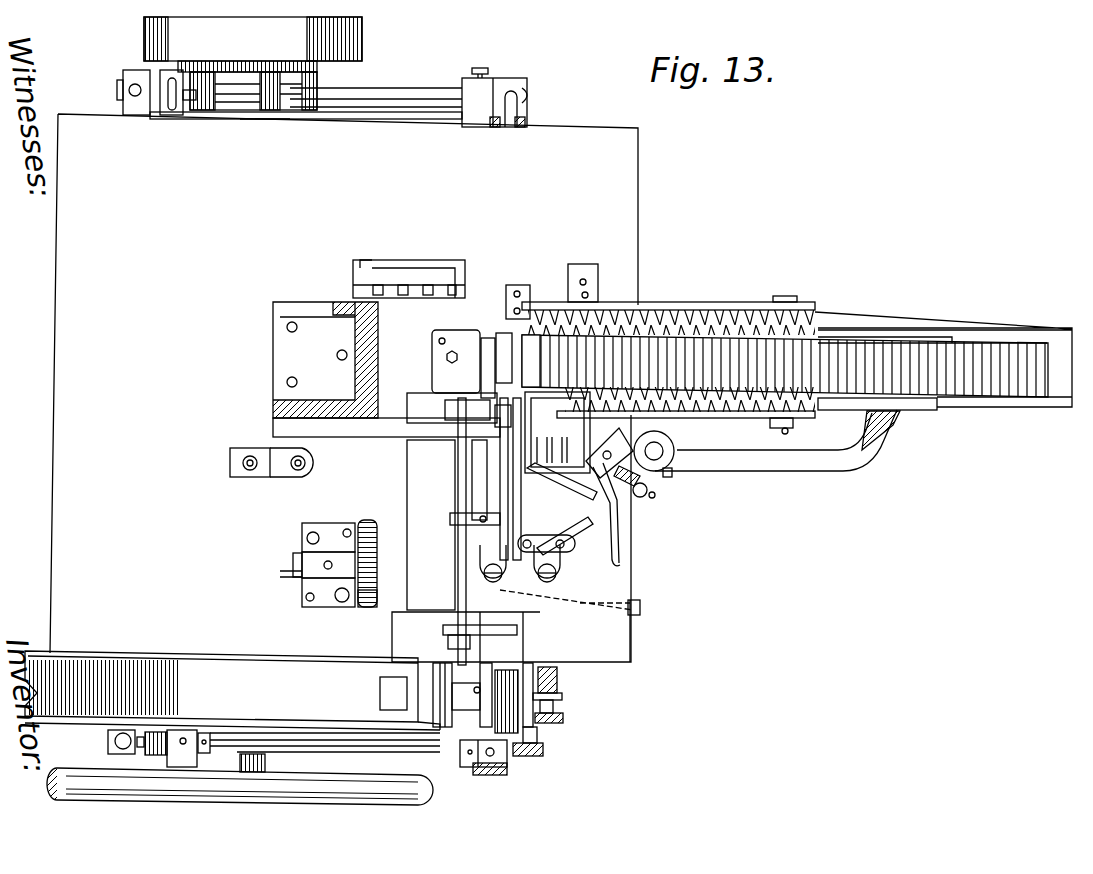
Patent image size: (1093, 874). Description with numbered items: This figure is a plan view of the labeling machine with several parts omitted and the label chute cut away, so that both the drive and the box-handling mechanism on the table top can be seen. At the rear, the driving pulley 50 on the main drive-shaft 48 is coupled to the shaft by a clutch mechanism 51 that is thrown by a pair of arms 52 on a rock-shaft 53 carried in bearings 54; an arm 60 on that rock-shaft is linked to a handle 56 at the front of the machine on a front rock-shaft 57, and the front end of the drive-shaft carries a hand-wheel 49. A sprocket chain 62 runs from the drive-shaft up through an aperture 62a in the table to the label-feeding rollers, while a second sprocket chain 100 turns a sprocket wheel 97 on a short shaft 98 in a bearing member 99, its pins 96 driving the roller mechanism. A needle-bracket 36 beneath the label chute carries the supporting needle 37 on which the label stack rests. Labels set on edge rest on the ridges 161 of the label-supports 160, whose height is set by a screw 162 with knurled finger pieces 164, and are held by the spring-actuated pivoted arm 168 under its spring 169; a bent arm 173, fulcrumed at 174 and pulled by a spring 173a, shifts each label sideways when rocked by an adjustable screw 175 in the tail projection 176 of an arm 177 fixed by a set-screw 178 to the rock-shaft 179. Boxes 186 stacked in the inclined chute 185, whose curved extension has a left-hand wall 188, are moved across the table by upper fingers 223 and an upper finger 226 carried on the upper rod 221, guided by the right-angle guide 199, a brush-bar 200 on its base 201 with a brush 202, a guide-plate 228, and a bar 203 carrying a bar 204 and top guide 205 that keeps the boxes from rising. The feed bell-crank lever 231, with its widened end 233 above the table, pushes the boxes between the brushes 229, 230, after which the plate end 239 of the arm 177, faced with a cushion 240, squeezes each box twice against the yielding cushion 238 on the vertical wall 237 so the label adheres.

The driving pulley 50 is at (253, 39).
The arms 52 is at (199, 70).
The clutch mechanism 51 is at (302, 114).
The rock-shaft 53 is at (394, 92).
The bearings 54 is at (165, 75).
The arm 60 is at (125, 78).
The main drive-shaft 48 is at (250, 125).
The sprocket chain 62 is at (357, 280).
The aperture 62a is at (363, 265).
The feed bell-crank lever 231 is at (592, 308).
The boxes 186 is at (655, 347).
The brush 229 is at (733, 318).
The stop or guide-plate 228 is at (512, 322).
The widened end 233 is at (500, 358).
The base 201 is at (432, 374).
The upper fingers 223 is at (490, 400).
The brush-bar 200 is at (452, 406).
The brush 202 is at (507, 423).
The bar 203 is at (380, 438).
The right-angle plate or guide 199 is at (557, 432).
The fulcrum 174 is at (604, 454).
The rock-shaft 179 is at (658, 449).
The yielding cushion 238 is at (870, 338).
The vertical flange or wall 237 is at (933, 330).
The brush 230 is at (800, 420).
The cushion 240 is at (920, 410).
The plate end 239 is at (890, 413).
The arm 177 is at (805, 468).
The set-screw 178 is at (673, 476).
The tail projection 176 is at (643, 497).
The adjustable screw 175 is at (656, 496).
The bent arm 173 is at (625, 523).
The spring 173a is at (572, 493).
The bar 204 is at (500, 452).
The top guide 205 is at (513, 498).
The upper finger 226 is at (450, 520).
The spring-actuated pivoted arm 168 is at (533, 535).
The spring 169 is at (577, 536).
The ridges 161 is at (590, 550).
The label-supports 160 is at (562, 570).
The upper rod 221 is at (460, 598).
The needle-bracket 36 is at (265, 479).
The supporting needle 37 is at (296, 470).
The sprocket chain 100 is at (364, 522).
The short shaft 98 is at (302, 555).
The pins 96 is at (377, 572).
The bearing member 99 is at (298, 582).
The sprocket wheel 97 is at (363, 607).
The inclined chute 185 is at (232, 690).
The handle 56 is at (108, 740).
The hand-wheel 49 is at (62, 776).
The front rock-shaft 57 is at (305, 752).
The left-hand wall 188 is at (430, 663).
The screw 162 is at (562, 682).
The knurled ends or finger pieces 164 is at (545, 750).